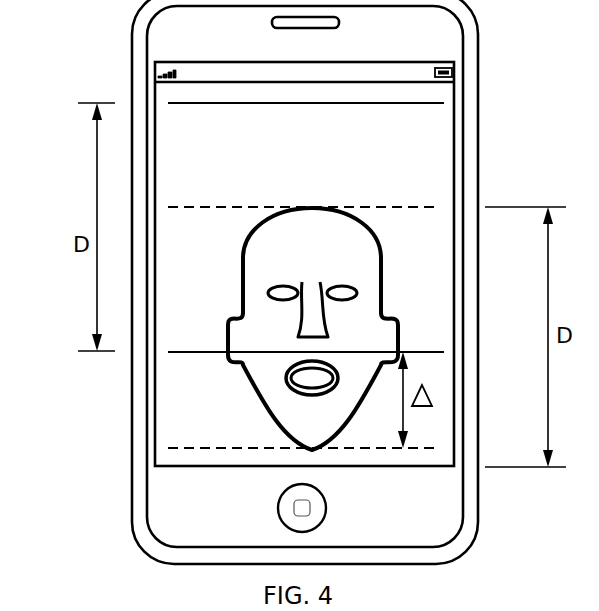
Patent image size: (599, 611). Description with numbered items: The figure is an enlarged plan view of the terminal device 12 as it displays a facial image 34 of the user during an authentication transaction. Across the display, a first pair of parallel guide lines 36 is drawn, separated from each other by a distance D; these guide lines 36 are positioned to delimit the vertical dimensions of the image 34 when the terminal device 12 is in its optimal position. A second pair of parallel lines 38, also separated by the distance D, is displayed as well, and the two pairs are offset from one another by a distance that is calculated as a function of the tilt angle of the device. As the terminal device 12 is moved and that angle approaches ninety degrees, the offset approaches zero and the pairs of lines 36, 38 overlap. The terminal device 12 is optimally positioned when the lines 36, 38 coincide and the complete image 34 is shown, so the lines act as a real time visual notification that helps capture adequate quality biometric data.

The terminal device 12 is at (132, 47).
The facial image 34 is at (383, 258).
The first pair of parallel guide lines 36 is at (250, 107).
The second pair of parallel lines 38 is at (401, 202).